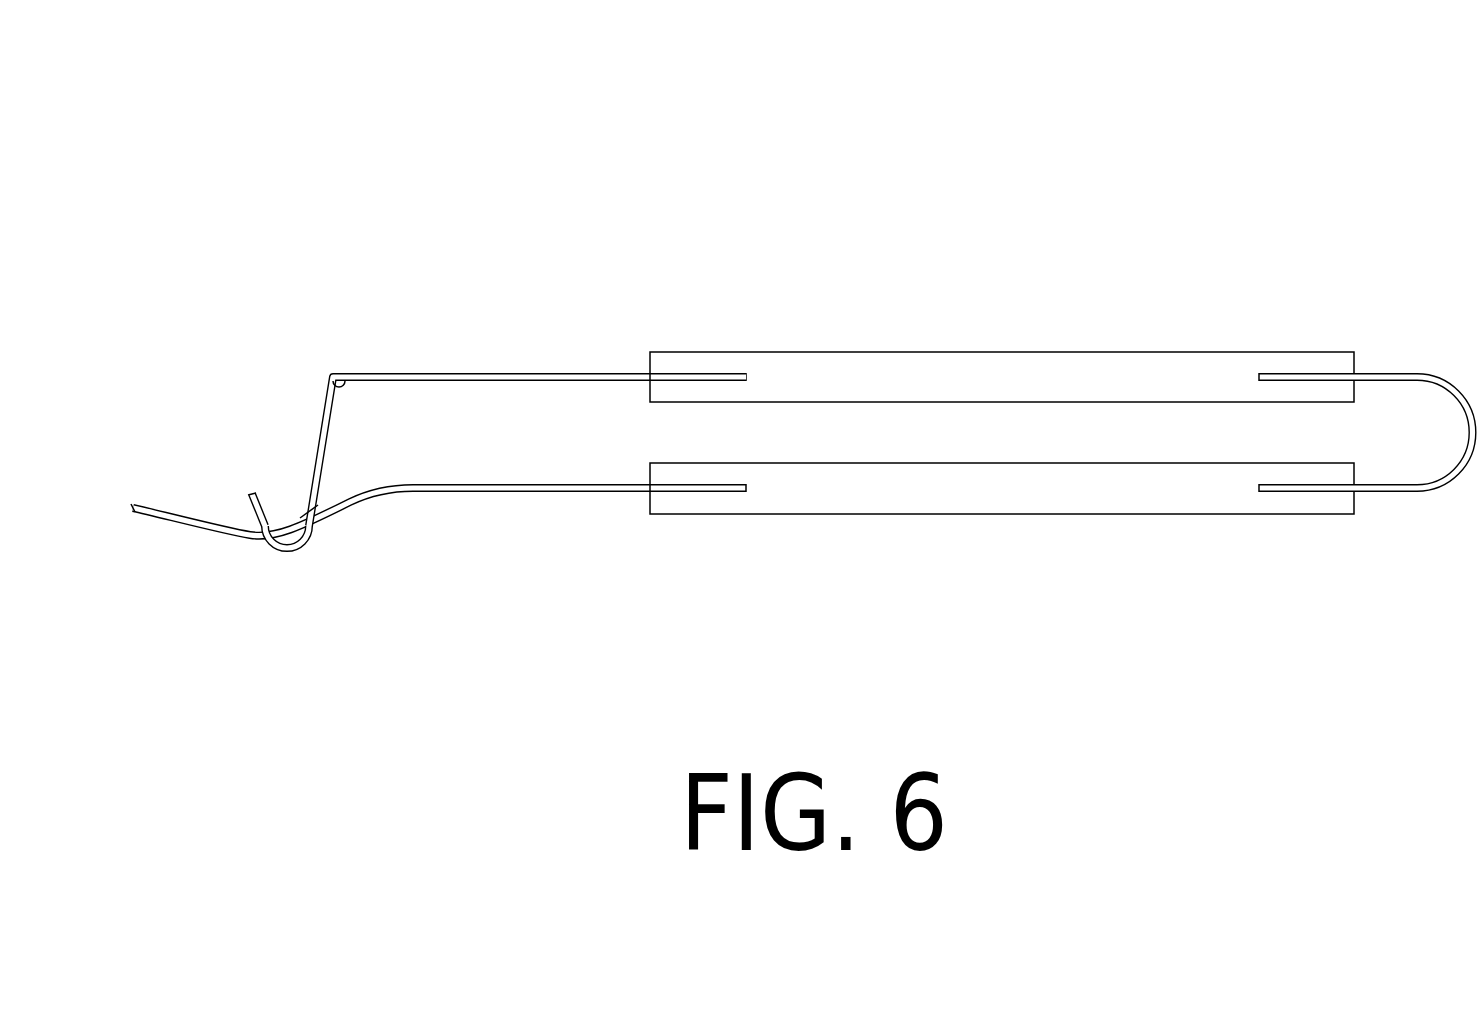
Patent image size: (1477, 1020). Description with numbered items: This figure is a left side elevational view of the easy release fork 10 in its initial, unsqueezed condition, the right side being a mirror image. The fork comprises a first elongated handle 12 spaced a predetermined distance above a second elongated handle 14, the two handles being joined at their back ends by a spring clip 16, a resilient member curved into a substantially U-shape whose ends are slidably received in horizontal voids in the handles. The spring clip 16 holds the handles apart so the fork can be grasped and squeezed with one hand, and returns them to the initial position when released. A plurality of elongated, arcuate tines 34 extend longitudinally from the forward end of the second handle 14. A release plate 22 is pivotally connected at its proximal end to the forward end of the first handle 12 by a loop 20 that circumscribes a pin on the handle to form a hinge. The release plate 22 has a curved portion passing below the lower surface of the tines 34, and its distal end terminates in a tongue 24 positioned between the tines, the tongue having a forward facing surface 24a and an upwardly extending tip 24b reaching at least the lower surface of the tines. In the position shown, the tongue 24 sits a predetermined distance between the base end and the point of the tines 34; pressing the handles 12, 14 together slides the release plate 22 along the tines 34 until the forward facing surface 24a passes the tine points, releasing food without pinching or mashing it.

The easy release fork 10 is at (801, 396).
The first elongated handle 12 is at (995, 365).
The second elongated handle 14 is at (995, 488).
The spring clip 16 is at (1413, 487).
The loop 20 is at (342, 368).
The release plate 22 is at (313, 450).
The tongue 24 is at (283, 580).
The forward facing surface 24a is at (253, 510).
The upwardly extending tip 24b is at (256, 508).
The tines 34 is at (168, 522).